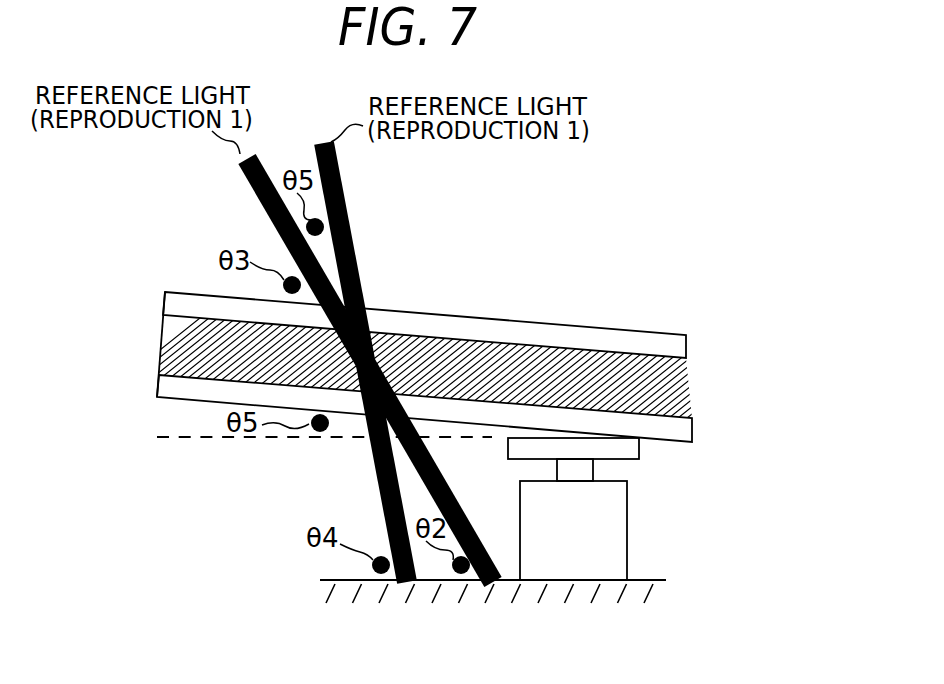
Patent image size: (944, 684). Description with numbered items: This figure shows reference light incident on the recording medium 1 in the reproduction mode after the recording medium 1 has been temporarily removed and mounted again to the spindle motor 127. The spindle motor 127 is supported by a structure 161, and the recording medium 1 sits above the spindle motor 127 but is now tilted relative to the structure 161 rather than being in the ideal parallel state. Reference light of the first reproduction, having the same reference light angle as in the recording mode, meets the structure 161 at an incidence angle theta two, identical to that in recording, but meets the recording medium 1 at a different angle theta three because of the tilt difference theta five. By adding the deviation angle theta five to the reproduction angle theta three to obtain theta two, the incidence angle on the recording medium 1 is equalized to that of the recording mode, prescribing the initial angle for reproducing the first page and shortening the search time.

The recording medium 1 is at (528, 322).
The spindle motor 127 is at (628, 528).
The structure 161 is at (607, 603).